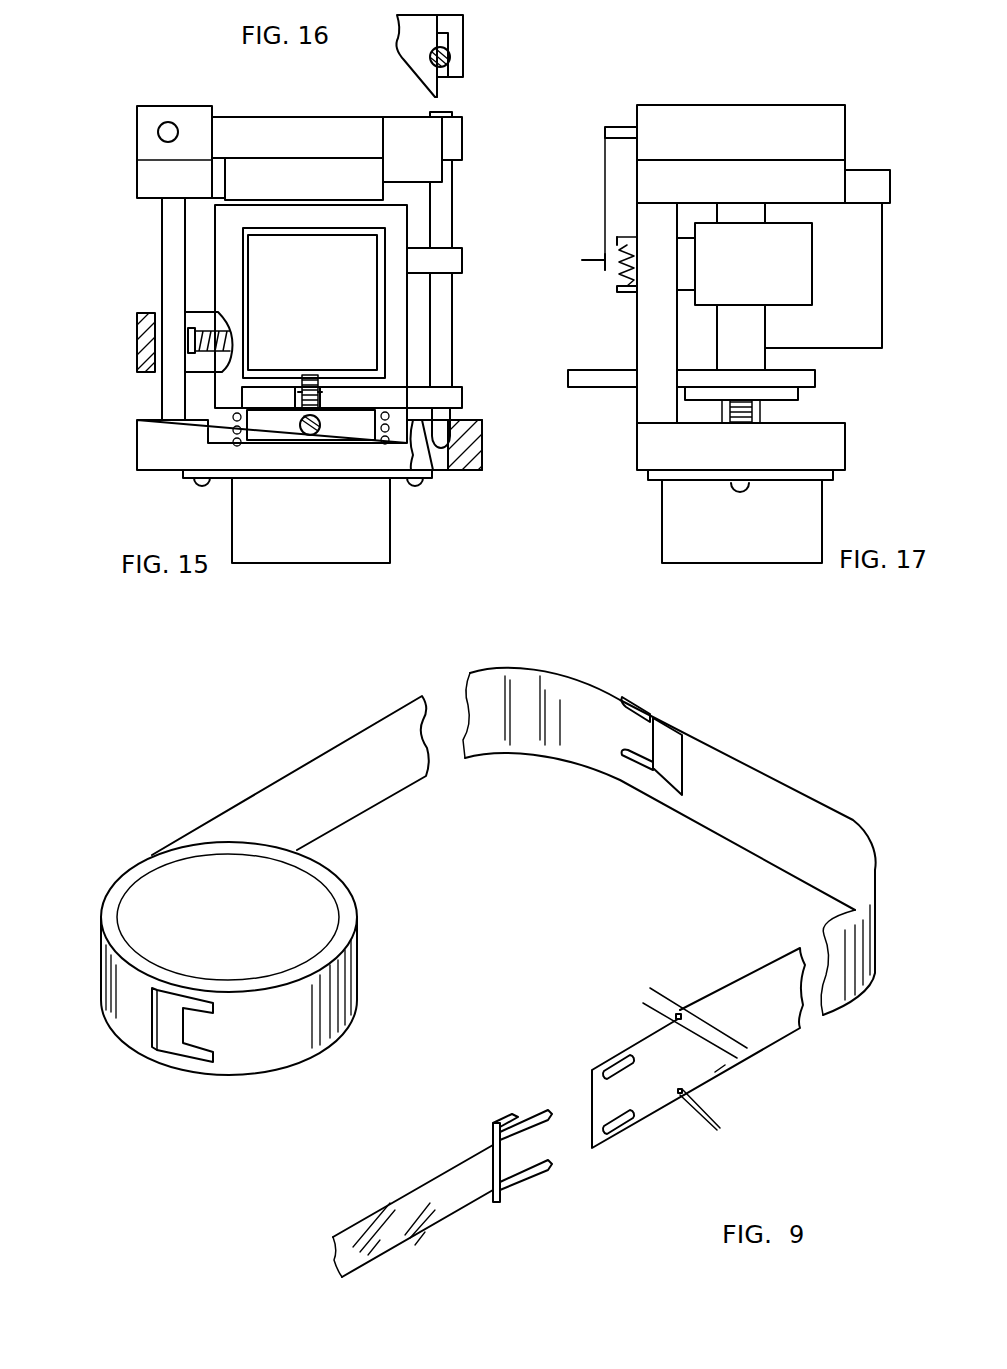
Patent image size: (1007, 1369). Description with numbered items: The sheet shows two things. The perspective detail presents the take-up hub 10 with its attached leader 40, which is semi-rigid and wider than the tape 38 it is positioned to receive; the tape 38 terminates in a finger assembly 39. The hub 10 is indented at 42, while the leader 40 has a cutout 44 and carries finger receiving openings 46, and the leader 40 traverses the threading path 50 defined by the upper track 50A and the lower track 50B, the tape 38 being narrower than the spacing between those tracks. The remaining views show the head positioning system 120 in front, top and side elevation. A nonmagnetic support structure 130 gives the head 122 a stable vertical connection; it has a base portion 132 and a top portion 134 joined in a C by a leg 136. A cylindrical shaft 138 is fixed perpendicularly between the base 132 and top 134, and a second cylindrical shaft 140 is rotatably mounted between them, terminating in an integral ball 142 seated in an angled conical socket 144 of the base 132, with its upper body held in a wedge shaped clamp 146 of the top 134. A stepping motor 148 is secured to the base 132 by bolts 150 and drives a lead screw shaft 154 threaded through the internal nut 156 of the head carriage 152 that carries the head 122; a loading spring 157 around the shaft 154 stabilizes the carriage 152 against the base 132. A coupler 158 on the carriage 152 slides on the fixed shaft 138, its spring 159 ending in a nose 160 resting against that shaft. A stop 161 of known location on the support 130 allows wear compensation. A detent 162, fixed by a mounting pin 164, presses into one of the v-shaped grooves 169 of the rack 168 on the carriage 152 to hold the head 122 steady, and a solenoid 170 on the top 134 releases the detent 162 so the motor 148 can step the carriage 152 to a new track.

In FIG. 9, the take-up hub 10 is at (355, 951).
In FIG. 9, the tape 38 is at (425, 1212).
In FIG. 9, the finger assembly 39 is at (504, 1168).
In FIG. 9, the leader 40 is at (307, 763).
In FIG. 9, the indent 42 is at (152, 1048).
In FIG. 9, the cutout 44 is at (658, 728).
In FIG. 9, the finger receiving openings 46 is at (612, 1068).
In FIG. 15, the threading path 50 is at (196, 490).
In FIG. 9, the upper track 50A is at (680, 1014).
In FIG. 9, the lower track 50B is at (680, 1095).
In FIG. 15, the head positioning system 120 is at (580, 534).
In FIG. 15, the head 122 is at (332, 341).
In FIG. 16, the support structure 130 is at (410, 38).
In FIG. 15, the support structure 130 is at (278, 128).
In FIG. 17, the support structure 130 is at (798, 118).
In FIG. 15, the base portion 132 is at (274, 465).
In FIG. 17, the base portion 132 is at (790, 461).
In FIG. 15, the top portion 134 is at (328, 154).
In FIG. 17, the top portion 134 is at (780, 147).
In FIG. 17, the leg 136 is at (650, 333).
In FIG. 15, the cylindrical shaft 138 is at (162, 266).
In FIG. 16, the second cylindrical shaft 140 is at (450, 53).
In FIG. 15, the second cylindrical shaft 140 is at (452, 222).
In FIG. 15, the ball 142 is at (455, 447).
In FIG. 15, the angled conical socket 144 is at (453, 423).
In FIG. 16, the wedge shaped clamp 146 is at (455, 60).
In FIG. 15, the stepping motor 148 is at (340, 540).
In FIG. 17, the stepping motor 148 is at (752, 545).
In FIG. 15, the bolts 150 is at (420, 490).
In FIG. 17, the bolts 150 is at (745, 493).
In FIG. 15, the head carriage 152 is at (355, 183).
In FIG. 17, the head carriage 152 is at (808, 382).
In FIG. 15, the lead screw shaft 154 is at (322, 396).
In FIG. 17, the lead screw shaft 154 is at (762, 418).
In FIG. 15, the internal nut 156 is at (298, 396).
In FIG. 15, the loading spring 157 is at (240, 430).
In FIG. 15, the coupler 158 is at (137, 340).
In FIG. 15, the spring 159 is at (222, 335).
In FIG. 15, the nose 160 is at (197, 330).
In FIG. 17, the nose 160 is at (617, 177).
In FIG. 15, the stop 161 is at (225, 198).
In FIG. 17, the detent 162 is at (595, 268).
In FIG. 17, the mounting pin 164 is at (620, 128).
In FIG. 17, the rack 168 is at (620, 237).
In FIG. 17, the v-shaped grooves 169 is at (632, 272).
In FIG. 15, the solenoid 170 is at (158, 133).